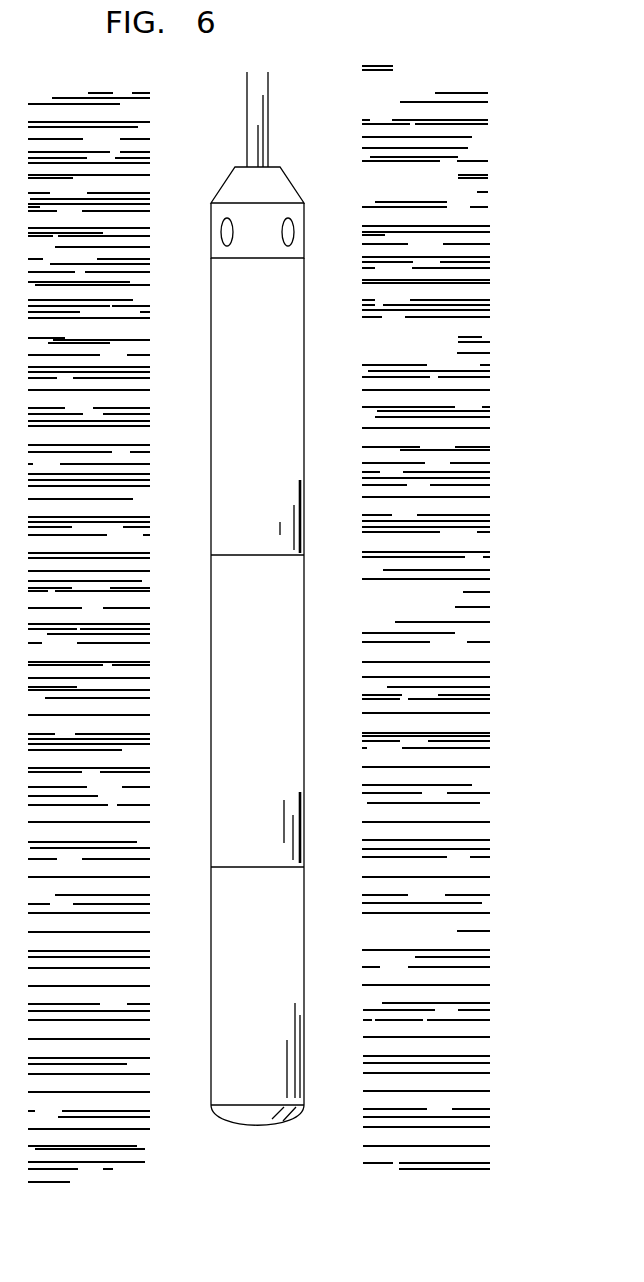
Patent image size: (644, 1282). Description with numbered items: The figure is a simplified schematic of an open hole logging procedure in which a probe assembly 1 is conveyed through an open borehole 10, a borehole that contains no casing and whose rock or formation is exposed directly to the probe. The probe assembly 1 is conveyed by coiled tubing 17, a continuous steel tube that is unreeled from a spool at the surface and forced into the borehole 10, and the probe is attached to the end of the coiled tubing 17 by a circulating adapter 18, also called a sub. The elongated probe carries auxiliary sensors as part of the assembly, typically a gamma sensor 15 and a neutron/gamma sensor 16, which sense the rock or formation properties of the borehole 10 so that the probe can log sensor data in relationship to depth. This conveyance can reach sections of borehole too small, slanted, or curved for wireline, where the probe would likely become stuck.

The probe assembly 1 is at (336, 596).
The open borehole 10 is at (488, 923).
The gamma sensor 15 is at (305, 640).
The neutron/gamma sensor 16 is at (305, 973).
The coiled tubing 17 is at (267, 128).
The circulating adapter 18 is at (303, 227).